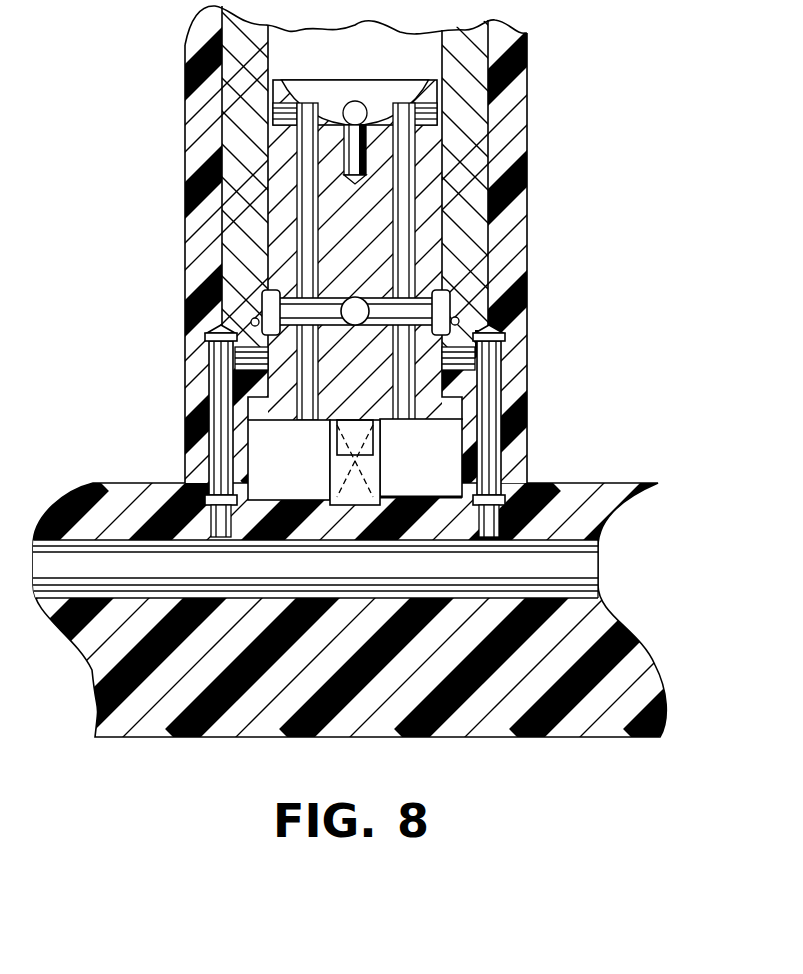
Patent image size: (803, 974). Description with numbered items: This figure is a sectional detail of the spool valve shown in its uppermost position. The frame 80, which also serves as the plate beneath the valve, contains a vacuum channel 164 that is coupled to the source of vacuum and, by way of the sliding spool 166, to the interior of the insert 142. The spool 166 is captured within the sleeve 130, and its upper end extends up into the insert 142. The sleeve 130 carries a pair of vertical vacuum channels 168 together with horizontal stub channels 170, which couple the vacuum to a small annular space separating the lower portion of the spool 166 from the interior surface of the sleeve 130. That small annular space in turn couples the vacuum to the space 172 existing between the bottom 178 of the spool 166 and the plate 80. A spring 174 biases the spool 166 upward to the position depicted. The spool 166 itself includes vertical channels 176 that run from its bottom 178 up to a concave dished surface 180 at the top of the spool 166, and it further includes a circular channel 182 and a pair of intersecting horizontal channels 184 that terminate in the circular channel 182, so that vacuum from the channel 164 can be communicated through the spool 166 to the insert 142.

The frame 80 is at (517, 718).
The vacuum channel 164 is at (565, 570).
The sleeve 130 is at (510, 213).
The insert 142 is at (444, 100).
The sliding spool 166 is at (295, 235).
The vertical channels 176 is at (407, 178).
The concave dished surface 180 is at (315, 98).
The intersecting horizontal channels 184 is at (412, 303).
The circular channel 182 is at (270, 288).
The horizontal stub channels 170 is at (222, 340).
The vertical vacuum channels 168 is at (222, 398).
The bottom of the spool 178 is at (272, 420).
The spring 174 is at (330, 467).
The space 172 is at (428, 472).